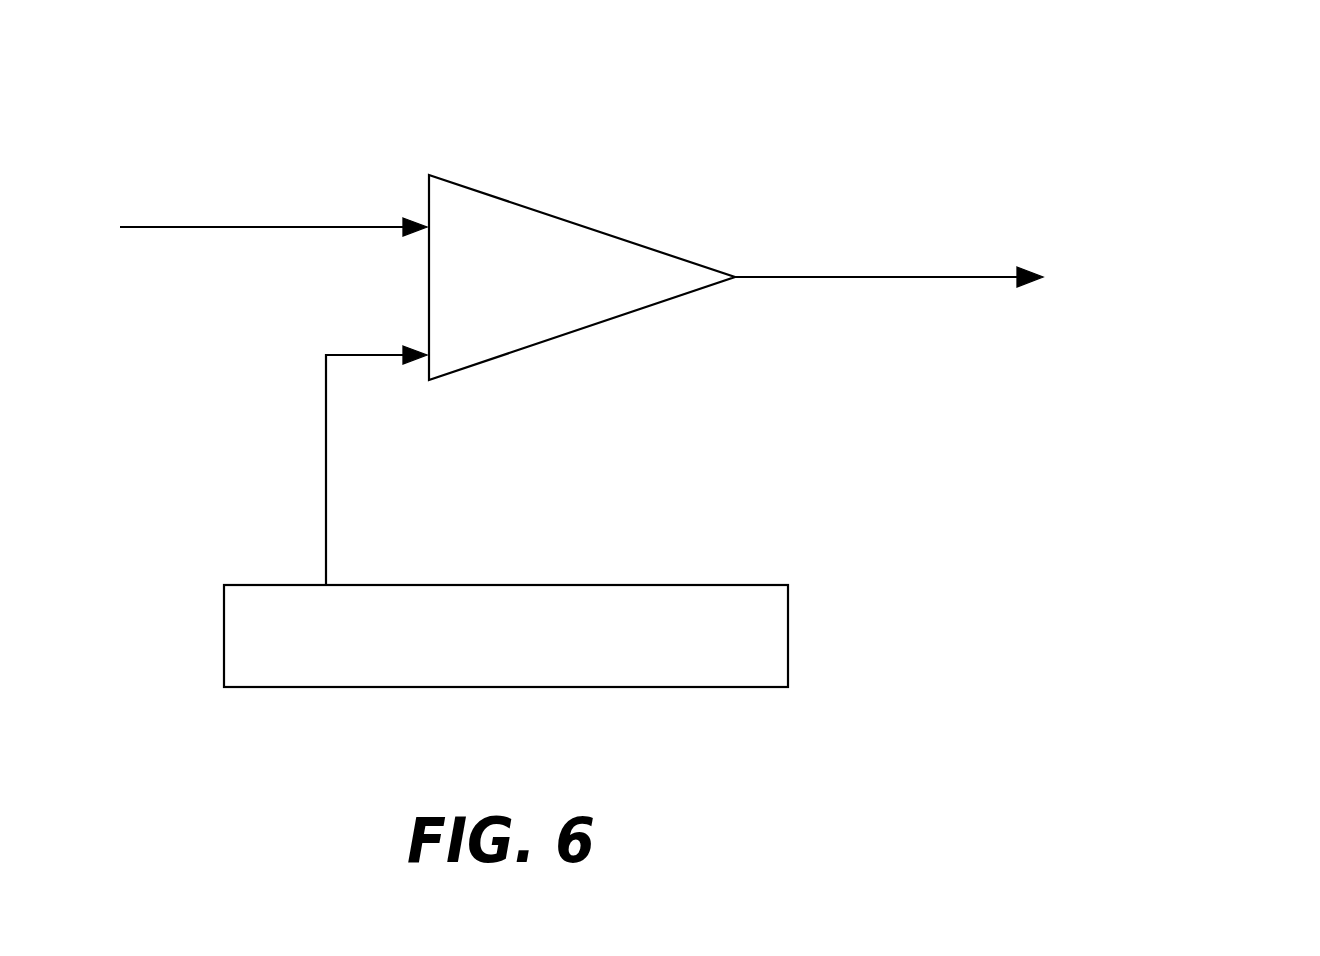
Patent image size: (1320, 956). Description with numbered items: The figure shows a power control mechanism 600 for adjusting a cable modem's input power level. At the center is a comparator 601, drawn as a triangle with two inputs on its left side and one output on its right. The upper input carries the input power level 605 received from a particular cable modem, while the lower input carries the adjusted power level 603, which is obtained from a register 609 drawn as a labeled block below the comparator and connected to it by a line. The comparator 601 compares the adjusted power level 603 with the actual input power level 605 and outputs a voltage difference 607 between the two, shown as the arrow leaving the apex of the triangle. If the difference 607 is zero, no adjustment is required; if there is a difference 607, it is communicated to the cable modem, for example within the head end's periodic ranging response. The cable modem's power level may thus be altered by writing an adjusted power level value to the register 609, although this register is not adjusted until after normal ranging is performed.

The power control mechanism 600 is at (1142, 220).
The comparator 601 is at (548, 215).
The adjusted power level 603 is at (327, 497).
The input power level 605 is at (155, 228).
The voltage difference 607 is at (893, 276).
The register 609 is at (789, 618).